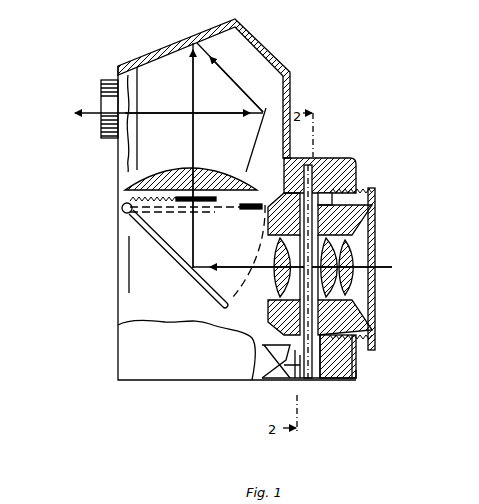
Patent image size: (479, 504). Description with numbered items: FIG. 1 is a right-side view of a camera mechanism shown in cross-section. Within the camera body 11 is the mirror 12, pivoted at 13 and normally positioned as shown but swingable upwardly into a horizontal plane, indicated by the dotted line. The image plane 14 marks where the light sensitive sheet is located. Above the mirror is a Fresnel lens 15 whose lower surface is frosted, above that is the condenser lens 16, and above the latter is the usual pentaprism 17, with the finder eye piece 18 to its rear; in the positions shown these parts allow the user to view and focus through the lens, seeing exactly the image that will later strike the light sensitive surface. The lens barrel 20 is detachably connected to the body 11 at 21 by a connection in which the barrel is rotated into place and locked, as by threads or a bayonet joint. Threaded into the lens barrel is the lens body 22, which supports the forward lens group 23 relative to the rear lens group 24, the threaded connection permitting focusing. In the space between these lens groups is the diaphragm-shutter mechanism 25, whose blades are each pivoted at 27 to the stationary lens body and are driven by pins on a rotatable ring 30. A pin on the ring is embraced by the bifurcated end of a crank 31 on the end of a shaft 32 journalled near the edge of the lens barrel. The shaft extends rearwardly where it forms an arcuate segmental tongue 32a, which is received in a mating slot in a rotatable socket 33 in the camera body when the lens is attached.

The camera body 11 is at (291, 68).
The mirror 12 is at (156, 236).
The pivot 13 is at (122, 208).
The image plane 14 is at (131, 272).
The Fresnel lens 15 is at (124, 188).
The condenser lens 16 is at (248, 180).
The pentaprism 17 is at (257, 134).
The finder eye piece 18 is at (105, 82).
The lens barrel 20 is at (350, 163).
The detachable connection 21 is at (300, 160).
The lens body 22 is at (377, 200).
The forward lens group 23 is at (352, 256).
The rear lens group 24 is at (272, 253).
The diaphragm-shutter mechanism 25 is at (282, 288).
The blade pivot 27 is at (290, 196).
The rotatable ring 30 is at (320, 168).
The crank 31 is at (324, 380).
The shaft 32 is at (356, 375).
The segmental tongue 32a is at (292, 380).
The rotatable socket 33 is at (260, 386).